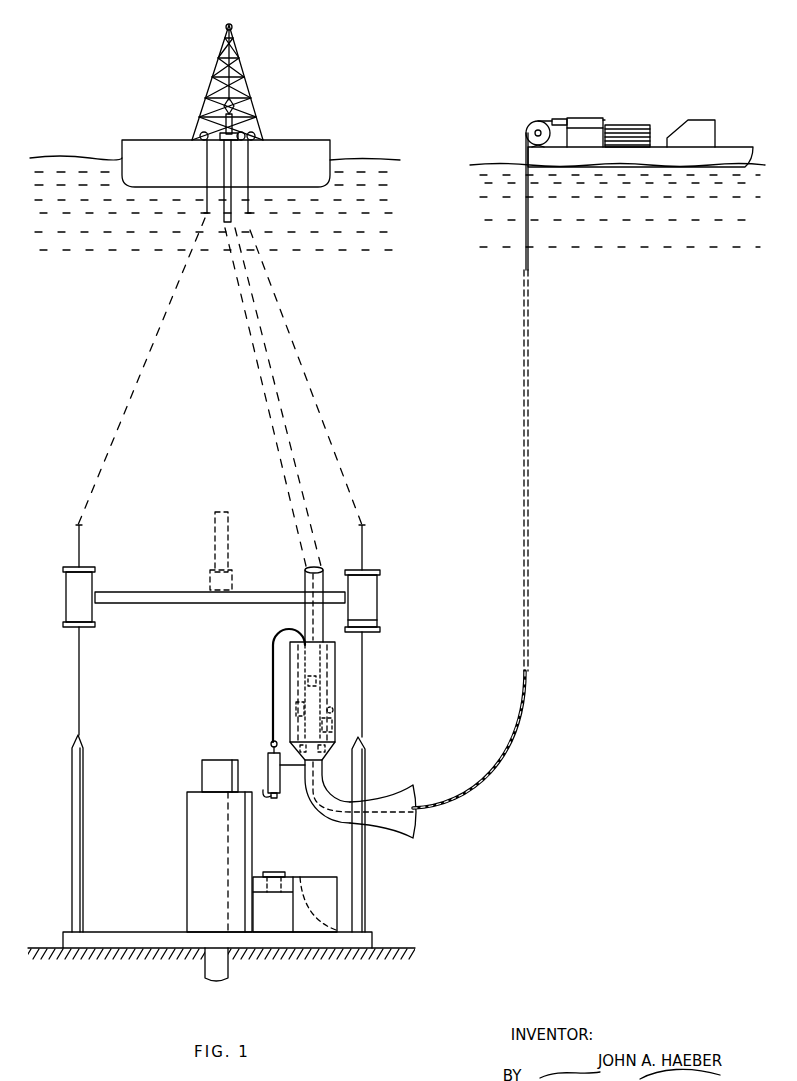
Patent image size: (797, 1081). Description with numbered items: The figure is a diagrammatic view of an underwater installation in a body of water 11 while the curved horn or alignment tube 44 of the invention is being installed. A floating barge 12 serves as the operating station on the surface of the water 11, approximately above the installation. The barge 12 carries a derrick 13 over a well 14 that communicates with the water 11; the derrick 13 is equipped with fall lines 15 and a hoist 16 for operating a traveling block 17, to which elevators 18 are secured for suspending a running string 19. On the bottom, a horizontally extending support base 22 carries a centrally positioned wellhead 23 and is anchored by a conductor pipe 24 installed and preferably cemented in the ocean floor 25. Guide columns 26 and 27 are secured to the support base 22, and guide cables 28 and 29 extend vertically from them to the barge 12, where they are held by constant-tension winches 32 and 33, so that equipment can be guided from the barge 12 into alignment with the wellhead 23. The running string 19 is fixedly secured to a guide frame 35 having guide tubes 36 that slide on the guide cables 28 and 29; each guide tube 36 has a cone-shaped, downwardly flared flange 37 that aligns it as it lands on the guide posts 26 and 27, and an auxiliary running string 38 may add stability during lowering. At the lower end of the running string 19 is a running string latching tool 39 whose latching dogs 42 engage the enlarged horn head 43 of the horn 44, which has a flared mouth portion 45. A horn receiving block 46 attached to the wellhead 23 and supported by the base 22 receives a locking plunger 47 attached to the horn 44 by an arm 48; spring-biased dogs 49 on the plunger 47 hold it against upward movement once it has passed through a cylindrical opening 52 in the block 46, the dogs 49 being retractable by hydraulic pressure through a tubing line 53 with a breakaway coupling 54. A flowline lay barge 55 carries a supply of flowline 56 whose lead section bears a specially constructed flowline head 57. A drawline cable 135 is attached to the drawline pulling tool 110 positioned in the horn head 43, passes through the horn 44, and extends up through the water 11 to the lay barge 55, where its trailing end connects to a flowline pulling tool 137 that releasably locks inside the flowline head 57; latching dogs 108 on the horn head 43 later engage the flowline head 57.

The body of water 11 is at (345, 152).
The floating barge 12 is at (133, 138).
The derrick 13 is at (238, 48).
The well 14 is at (249, 192).
The fall lines 15 is at (214, 72).
The hoist 16 is at (250, 122).
The traveling block 17 is at (226, 104).
The elevators 18 is at (223, 118).
The running string 19 is at (233, 221).
The support base 22 is at (150, 931).
The wellhead 23 is at (200, 812).
The conductor pipe 24 is at (229, 970).
The ocean floor 25 is at (45, 947).
The guide column 26 is at (72, 749).
The guide column 27 is at (366, 771).
The guide cable 28 is at (79, 661).
The guide cable 29 is at (363, 656).
The constant-tension winch 32 is at (200, 134).
The constant-tension winch 33 is at (257, 134).
The guide frame 35 is at (170, 592).
The guide tubes 36 is at (380, 586).
The flange 37 is at (380, 626).
The auxiliary running string 38 is at (214, 512).
The running string latching tool 39 is at (288, 664).
The latching dogs 42 is at (335, 710).
The horn head 43 is at (332, 727).
The curved horn 44 is at (324, 812).
The flared mouth portion 45 is at (411, 840).
The horn receiving block 46 is at (318, 877).
The locking plunger 47 is at (268, 760).
The arm 48 is at (306, 777).
The dogs 49 is at (266, 798).
The cylindrical opening 52 is at (274, 872).
The tubing line 53 is at (271, 640).
The breakaway coupling 54 is at (270, 742).
The flowline lay barge 55 is at (712, 119).
The flowline 56 is at (632, 124).
The flowline head 57 is at (594, 118).
The latching dogs 108 is at (333, 747).
The drawline pulling tool 110 is at (318, 682).
The drawline cable 135 is at (546, 120).
The flowline pulling tool 137 is at (560, 118).